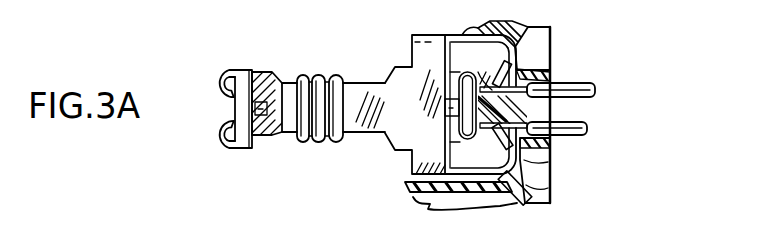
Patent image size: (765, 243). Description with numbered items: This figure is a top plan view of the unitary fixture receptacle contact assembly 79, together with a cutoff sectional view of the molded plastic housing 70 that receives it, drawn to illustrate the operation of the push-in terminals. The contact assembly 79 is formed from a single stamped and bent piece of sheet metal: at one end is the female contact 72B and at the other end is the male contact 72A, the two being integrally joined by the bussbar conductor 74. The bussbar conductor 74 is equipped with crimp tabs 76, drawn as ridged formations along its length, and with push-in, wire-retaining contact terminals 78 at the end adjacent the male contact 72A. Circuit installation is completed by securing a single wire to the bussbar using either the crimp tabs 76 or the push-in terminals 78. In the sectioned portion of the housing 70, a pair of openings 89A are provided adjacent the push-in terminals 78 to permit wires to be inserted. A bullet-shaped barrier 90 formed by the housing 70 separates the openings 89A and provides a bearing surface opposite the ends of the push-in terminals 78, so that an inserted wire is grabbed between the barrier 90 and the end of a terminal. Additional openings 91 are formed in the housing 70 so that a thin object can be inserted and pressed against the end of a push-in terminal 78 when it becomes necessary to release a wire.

The contact housing assembly 70 is at (552, 193).
The male contact 72A is at (460, 130).
The female contact 72B is at (222, 139).
The bussbar conductor 74 is at (365, 131).
The crimp tabs 76 is at (317, 143).
The push-in, wire-retaining contact terminals 78 is at (503, 141).
The integral contact assembly 79 is at (385, 185).
The openings 89A is at (550, 108).
The bullet-shaped barrier 90 is at (479, 90).
The additional openings 91 is at (537, 53).